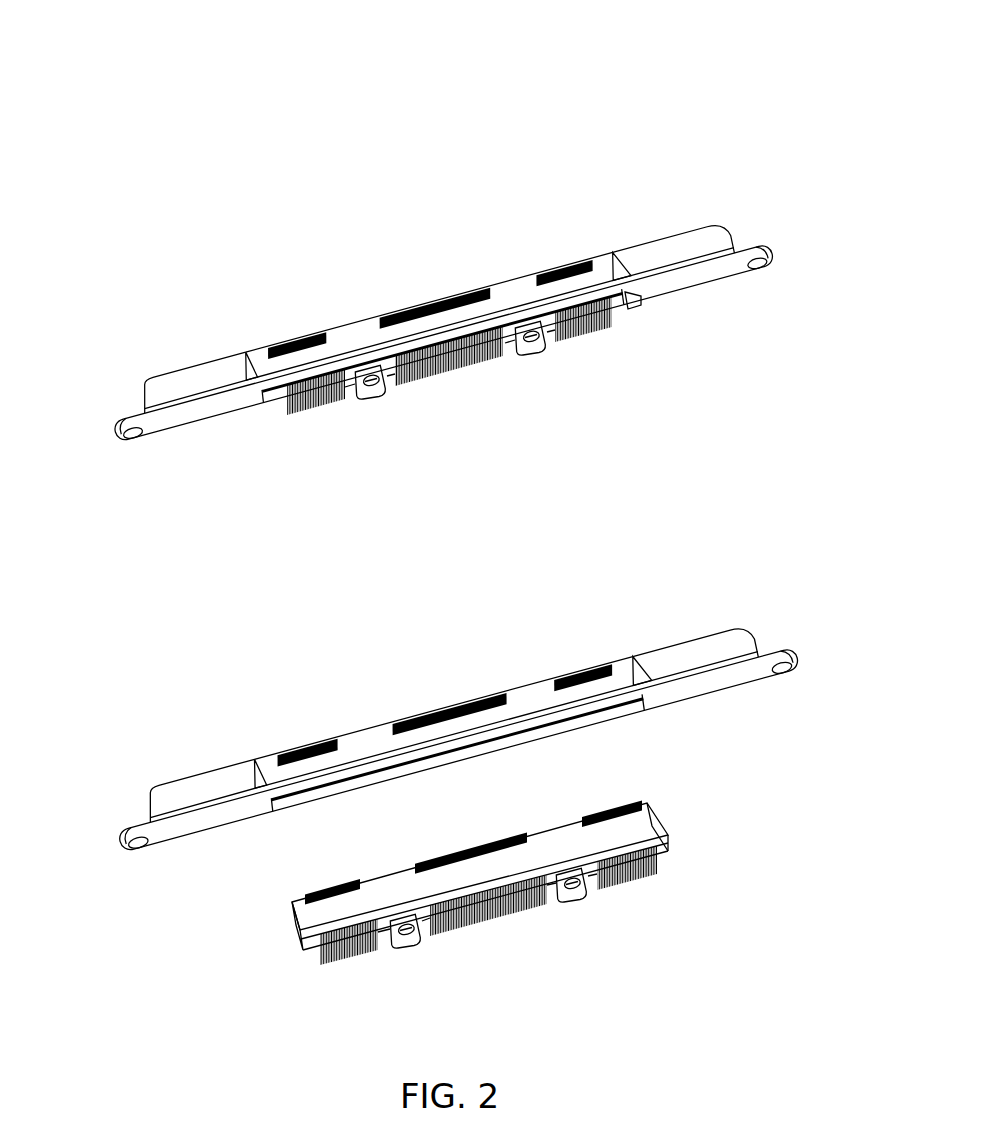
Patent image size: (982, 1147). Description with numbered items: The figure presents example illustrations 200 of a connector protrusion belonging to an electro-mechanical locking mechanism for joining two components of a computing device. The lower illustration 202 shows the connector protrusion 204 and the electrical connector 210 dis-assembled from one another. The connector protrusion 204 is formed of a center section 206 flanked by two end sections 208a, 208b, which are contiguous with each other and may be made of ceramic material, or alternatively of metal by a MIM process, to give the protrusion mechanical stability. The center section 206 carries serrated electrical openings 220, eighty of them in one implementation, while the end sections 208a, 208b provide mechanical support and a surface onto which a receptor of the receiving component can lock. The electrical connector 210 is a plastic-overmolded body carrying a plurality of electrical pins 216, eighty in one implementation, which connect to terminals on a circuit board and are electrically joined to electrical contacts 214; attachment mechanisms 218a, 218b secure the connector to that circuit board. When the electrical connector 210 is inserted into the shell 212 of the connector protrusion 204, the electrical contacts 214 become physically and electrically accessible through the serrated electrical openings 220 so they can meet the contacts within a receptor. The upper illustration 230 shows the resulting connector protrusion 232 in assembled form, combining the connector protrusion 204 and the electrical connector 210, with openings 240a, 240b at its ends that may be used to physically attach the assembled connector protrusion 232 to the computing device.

The illustrations 200 is at (476, 262).
The illustration 202 is at (477, 720).
The connector protrusion 204 is at (793, 612).
The center section 206 is at (530, 680).
The end section 208a is at (697, 641).
The end section 208b is at (181, 782).
The electrical connector 210 is at (508, 881).
The shell 212 is at (303, 801).
The electrical contacts 214 is at (627, 806).
The electrical pins 216 is at (648, 880).
The attachment mechanism 218a is at (413, 946).
The attachment mechanism 218b is at (582, 901).
The serrated electrical openings 220 is at (556, 680).
The illustration 230 is at (476, 343).
The connector protrusion 232 is at (764, 232).
The opening 240a is at (134, 447).
The opening 240b is at (758, 272).